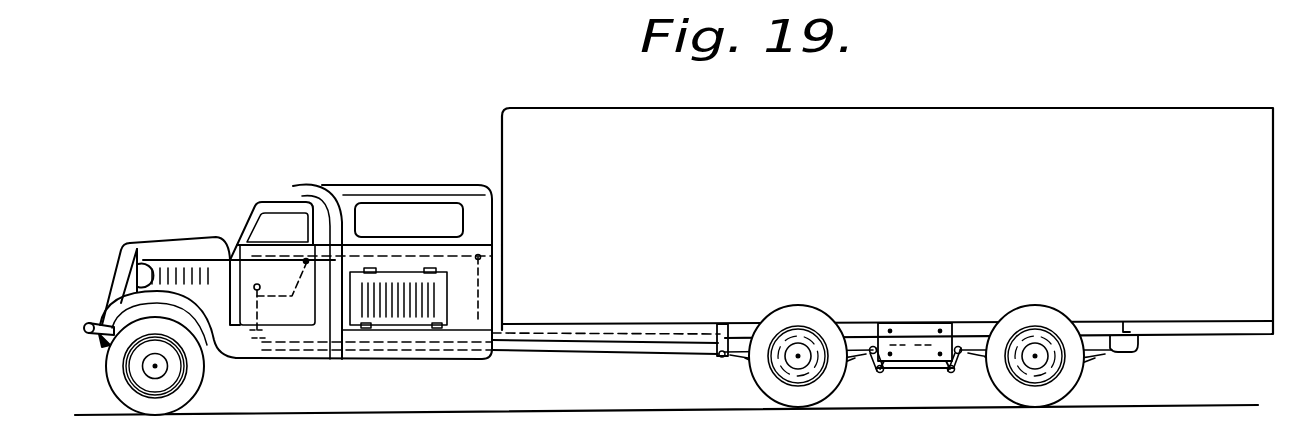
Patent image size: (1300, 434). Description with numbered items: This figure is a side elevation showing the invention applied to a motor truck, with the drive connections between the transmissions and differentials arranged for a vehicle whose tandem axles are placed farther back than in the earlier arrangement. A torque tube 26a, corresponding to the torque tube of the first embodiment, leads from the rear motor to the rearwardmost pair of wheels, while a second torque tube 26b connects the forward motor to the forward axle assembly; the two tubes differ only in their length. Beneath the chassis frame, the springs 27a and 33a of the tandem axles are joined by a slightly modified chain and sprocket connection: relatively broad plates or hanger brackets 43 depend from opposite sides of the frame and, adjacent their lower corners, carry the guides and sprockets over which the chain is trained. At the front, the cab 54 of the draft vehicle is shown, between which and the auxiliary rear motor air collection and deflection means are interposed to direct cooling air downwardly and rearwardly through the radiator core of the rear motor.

The cab 54 is at (264, 199).
The torque tube 26a is at (588, 334).
The torque tube 26b is at (682, 354).
The hanger bracket 43 is at (926, 332).
The spring 27a is at (860, 357).
The spring 33a is at (976, 362).